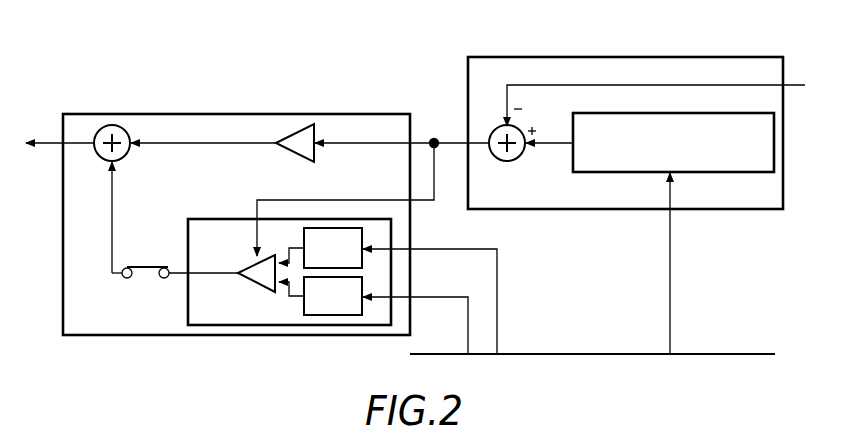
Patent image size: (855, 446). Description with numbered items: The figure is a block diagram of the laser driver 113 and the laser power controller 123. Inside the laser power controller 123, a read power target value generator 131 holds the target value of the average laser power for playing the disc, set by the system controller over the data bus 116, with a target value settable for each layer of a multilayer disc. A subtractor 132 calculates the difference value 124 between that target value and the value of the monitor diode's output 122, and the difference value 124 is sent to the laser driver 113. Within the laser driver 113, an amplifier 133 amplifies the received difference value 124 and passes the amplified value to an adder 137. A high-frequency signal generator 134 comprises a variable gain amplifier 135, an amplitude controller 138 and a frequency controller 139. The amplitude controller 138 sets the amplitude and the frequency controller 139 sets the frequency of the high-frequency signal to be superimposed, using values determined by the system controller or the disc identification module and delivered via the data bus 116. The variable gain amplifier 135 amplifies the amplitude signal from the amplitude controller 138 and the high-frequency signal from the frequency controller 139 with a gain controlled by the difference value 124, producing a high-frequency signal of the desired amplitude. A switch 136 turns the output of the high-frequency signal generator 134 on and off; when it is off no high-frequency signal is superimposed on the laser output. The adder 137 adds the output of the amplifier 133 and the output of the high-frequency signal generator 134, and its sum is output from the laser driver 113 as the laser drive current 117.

The laser driver 113 is at (140, 336).
The data bus 116 is at (582, 355).
The laser drive current 117 is at (50, 138).
The monitor diode's output 122 is at (794, 84).
The laser power controller 123 is at (622, 210).
The difference value 124 is at (436, 136).
The read power target value generator 131 is at (710, 173).
The subtractor 132 is at (500, 128).
The amplifier 133 is at (302, 124).
The high-frequency signal generator 134 is at (273, 326).
The variable gain amplifier 135 is at (248, 280).
The switch 136 is at (152, 271).
The adder 137 is at (120, 128).
The amplitude controller 138 is at (363, 240).
The frequency controller 139 is at (330, 316).